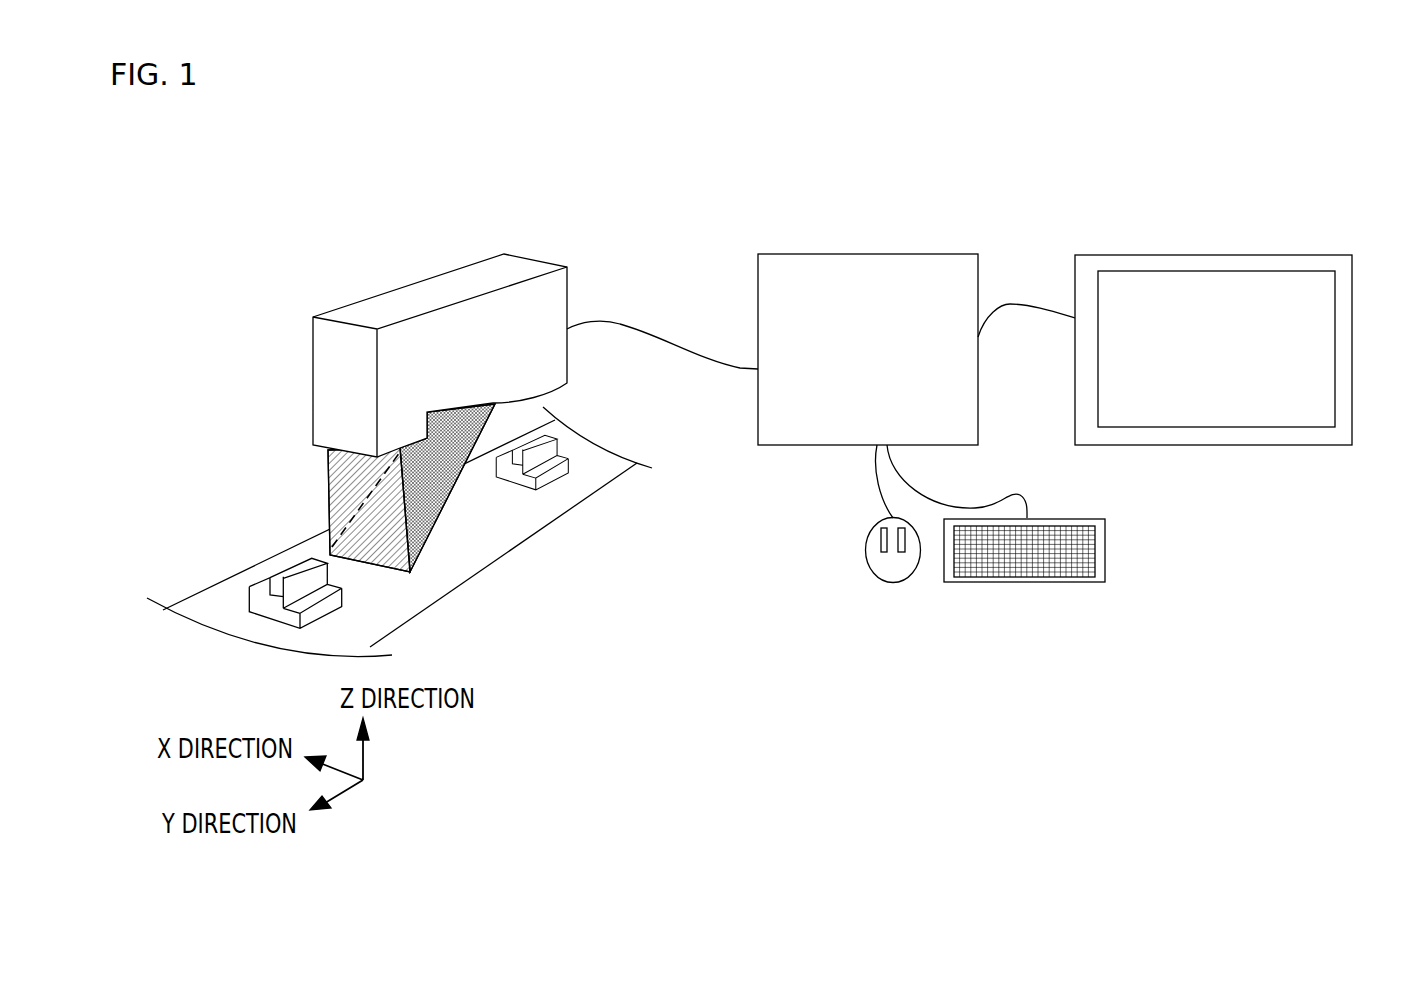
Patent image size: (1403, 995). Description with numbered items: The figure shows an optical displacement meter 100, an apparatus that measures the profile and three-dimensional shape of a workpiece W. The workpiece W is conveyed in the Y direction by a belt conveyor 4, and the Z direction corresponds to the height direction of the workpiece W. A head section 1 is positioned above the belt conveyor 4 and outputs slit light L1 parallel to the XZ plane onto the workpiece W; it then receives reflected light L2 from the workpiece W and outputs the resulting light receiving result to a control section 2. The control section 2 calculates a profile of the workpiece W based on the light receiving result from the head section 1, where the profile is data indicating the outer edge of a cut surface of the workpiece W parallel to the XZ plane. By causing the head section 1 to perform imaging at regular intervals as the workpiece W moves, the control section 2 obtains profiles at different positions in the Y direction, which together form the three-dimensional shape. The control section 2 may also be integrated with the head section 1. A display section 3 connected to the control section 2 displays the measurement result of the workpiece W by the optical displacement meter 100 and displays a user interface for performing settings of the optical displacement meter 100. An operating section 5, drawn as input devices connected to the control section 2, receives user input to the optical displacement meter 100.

The optical displacement meter 100 is at (1392, 177).
The head section 1 is at (436, 288).
The control section 2 is at (830, 253).
The display section 3 is at (1170, 253).
The belt conveyor 4 is at (225, 607).
The operating section 5 is at (882, 597).
The workpiece W is at (288, 572).
The slit light L1 is at (345, 492).
The reflected light L2 is at (425, 512).